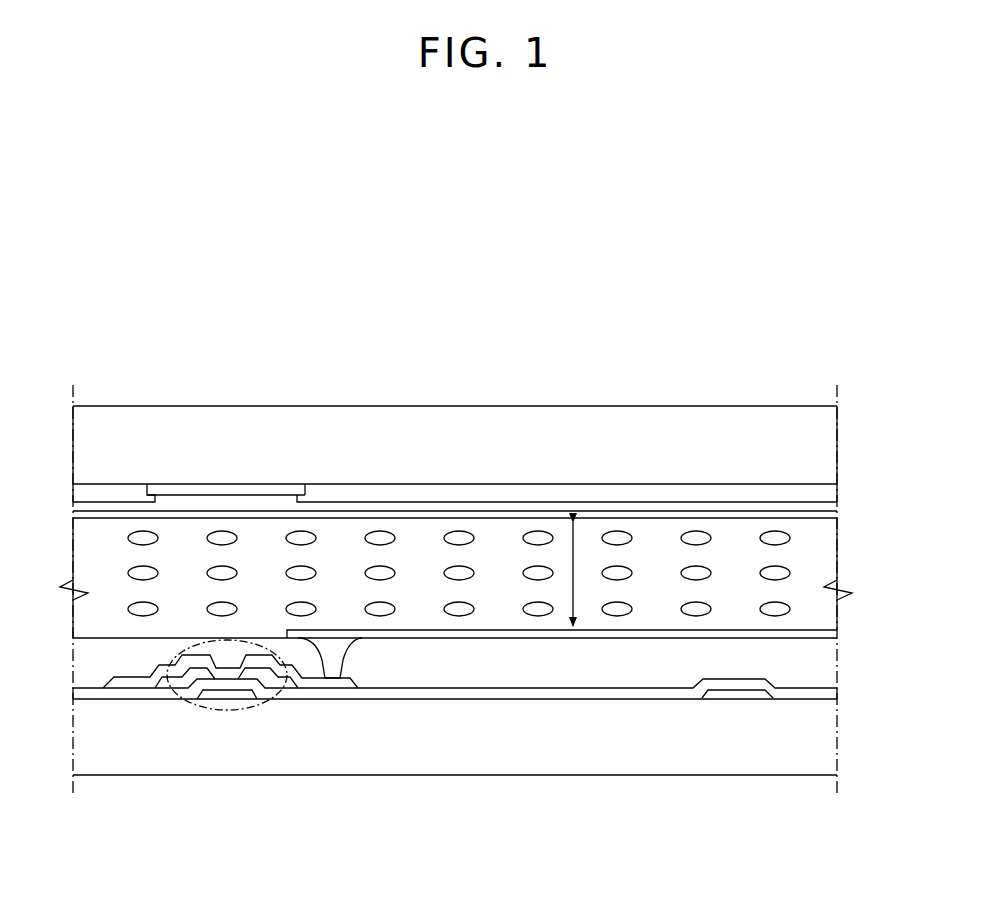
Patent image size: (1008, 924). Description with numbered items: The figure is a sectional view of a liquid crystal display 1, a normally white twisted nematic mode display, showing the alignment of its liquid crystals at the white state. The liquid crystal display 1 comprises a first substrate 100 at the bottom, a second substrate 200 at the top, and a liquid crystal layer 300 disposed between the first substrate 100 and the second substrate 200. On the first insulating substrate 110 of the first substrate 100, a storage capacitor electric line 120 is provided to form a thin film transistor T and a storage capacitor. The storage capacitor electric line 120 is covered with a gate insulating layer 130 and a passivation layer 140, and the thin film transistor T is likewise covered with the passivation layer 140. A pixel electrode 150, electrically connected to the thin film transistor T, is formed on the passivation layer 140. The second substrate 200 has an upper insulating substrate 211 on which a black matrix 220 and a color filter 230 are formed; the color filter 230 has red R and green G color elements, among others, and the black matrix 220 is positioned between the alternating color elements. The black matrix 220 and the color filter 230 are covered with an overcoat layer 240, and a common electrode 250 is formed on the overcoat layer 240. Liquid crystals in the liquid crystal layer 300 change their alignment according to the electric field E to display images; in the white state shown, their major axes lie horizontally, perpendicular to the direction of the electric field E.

The liquid crystal display 1 is at (194, 263).
The first substrate 100 is at (535, 829).
The first insulating substrate 110 is at (838, 742).
The storage capacitor electric line 120 is at (737, 694).
The gate insulating layer 130 is at (838, 692).
The passivation layer 140 is at (838, 668).
The pixel electrode 150 is at (838, 636).
The second substrate 200 is at (385, 339).
The upper base substrate 211 is at (837, 438).
The black matrix 220 is at (258, 485).
The color filter 230 is at (837, 489).
The overcoat layer 240 is at (838, 509).
The common electrode 250 is at (838, 517).
The liquid crystal layer 300 is at (838, 604).
The thin film transistor T is at (227, 710).
The electric field E is at (583, 574).
The green color element G is at (114, 494).
The red color element R is at (567, 494).